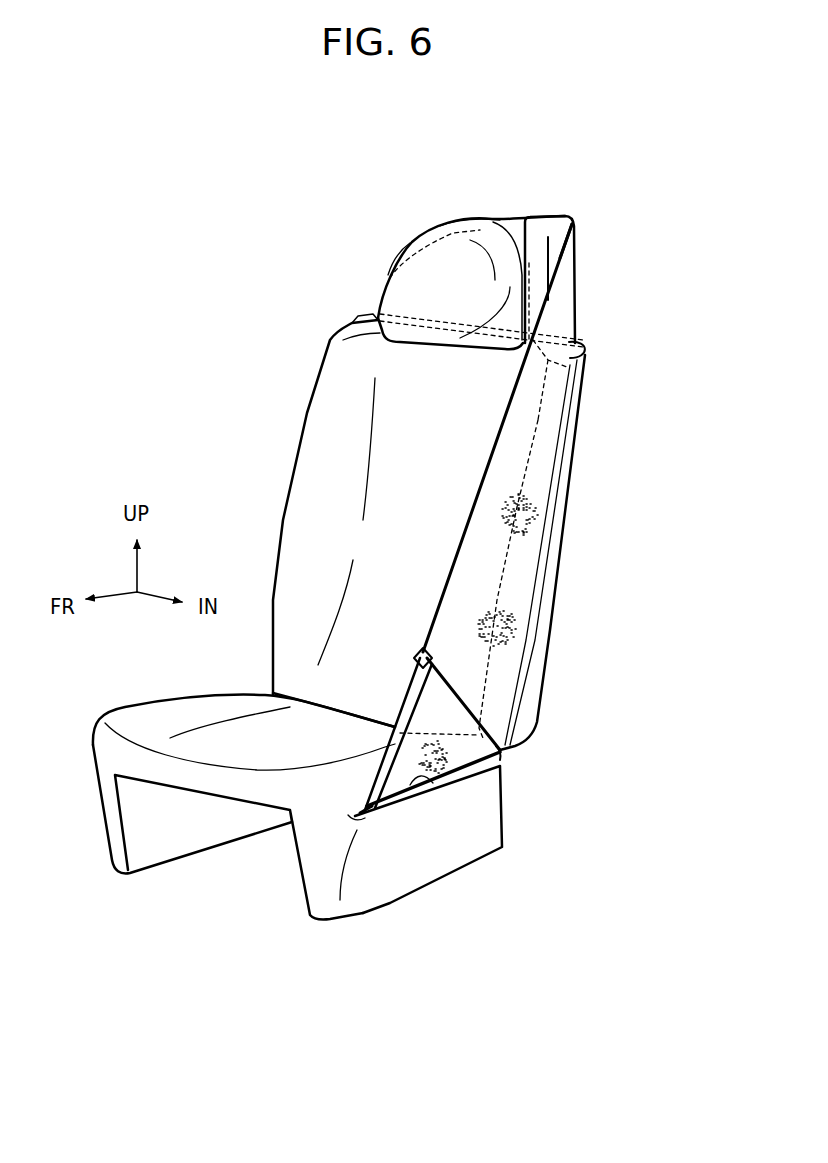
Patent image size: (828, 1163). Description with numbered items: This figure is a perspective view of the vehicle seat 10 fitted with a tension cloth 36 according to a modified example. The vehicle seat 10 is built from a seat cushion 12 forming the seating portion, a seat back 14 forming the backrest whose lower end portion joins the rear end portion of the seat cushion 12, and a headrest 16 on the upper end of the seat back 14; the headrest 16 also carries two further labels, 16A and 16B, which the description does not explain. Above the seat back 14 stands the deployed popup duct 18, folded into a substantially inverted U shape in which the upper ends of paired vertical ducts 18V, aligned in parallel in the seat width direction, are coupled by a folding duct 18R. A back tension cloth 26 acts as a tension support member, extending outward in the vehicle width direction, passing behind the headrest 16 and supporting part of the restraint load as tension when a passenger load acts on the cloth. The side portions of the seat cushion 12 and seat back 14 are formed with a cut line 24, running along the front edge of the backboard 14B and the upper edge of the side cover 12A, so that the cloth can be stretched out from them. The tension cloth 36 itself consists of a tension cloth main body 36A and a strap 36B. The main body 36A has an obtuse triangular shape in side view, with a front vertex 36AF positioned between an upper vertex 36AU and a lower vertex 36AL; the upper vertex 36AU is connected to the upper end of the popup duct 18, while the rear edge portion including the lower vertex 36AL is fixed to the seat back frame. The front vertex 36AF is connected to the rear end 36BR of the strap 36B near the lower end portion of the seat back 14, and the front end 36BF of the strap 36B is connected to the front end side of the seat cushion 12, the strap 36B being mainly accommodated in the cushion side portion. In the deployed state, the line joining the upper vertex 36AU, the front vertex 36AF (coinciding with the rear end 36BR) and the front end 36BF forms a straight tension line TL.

The vehicle seat 10 is at (291, 389).
The seat cushion 12 is at (173, 708).
The side cover 12A is at (495, 822).
The seat back 14 is at (287, 570).
The backboard 14B is at (575, 422).
The headrest 16 is at (433, 240).
The front surface of headrest 16A is at (460, 338).
The rear portion of headrest 16B is at (388, 275).
The popup duct 18 is at (570, 214).
The folding duct 18R is at (552, 218).
The vertical ducts 18V is at (523, 255).
The cut line 24 is at (540, 580).
The back tension cloth 26 is at (495, 220).
The tension cloth 36 is at (364, 606).
The tension cloth main body 36A is at (484, 543).
The front vertex 36AF is at (463, 704).
The lower vertex 36AL is at (500, 733).
The upper vertex 36AU is at (578, 258).
The strap 36B is at (402, 672).
The front end of strap 36BF is at (413, 783).
The rear end of strap 36BR is at (435, 662).
The tension line TL is at (485, 475).